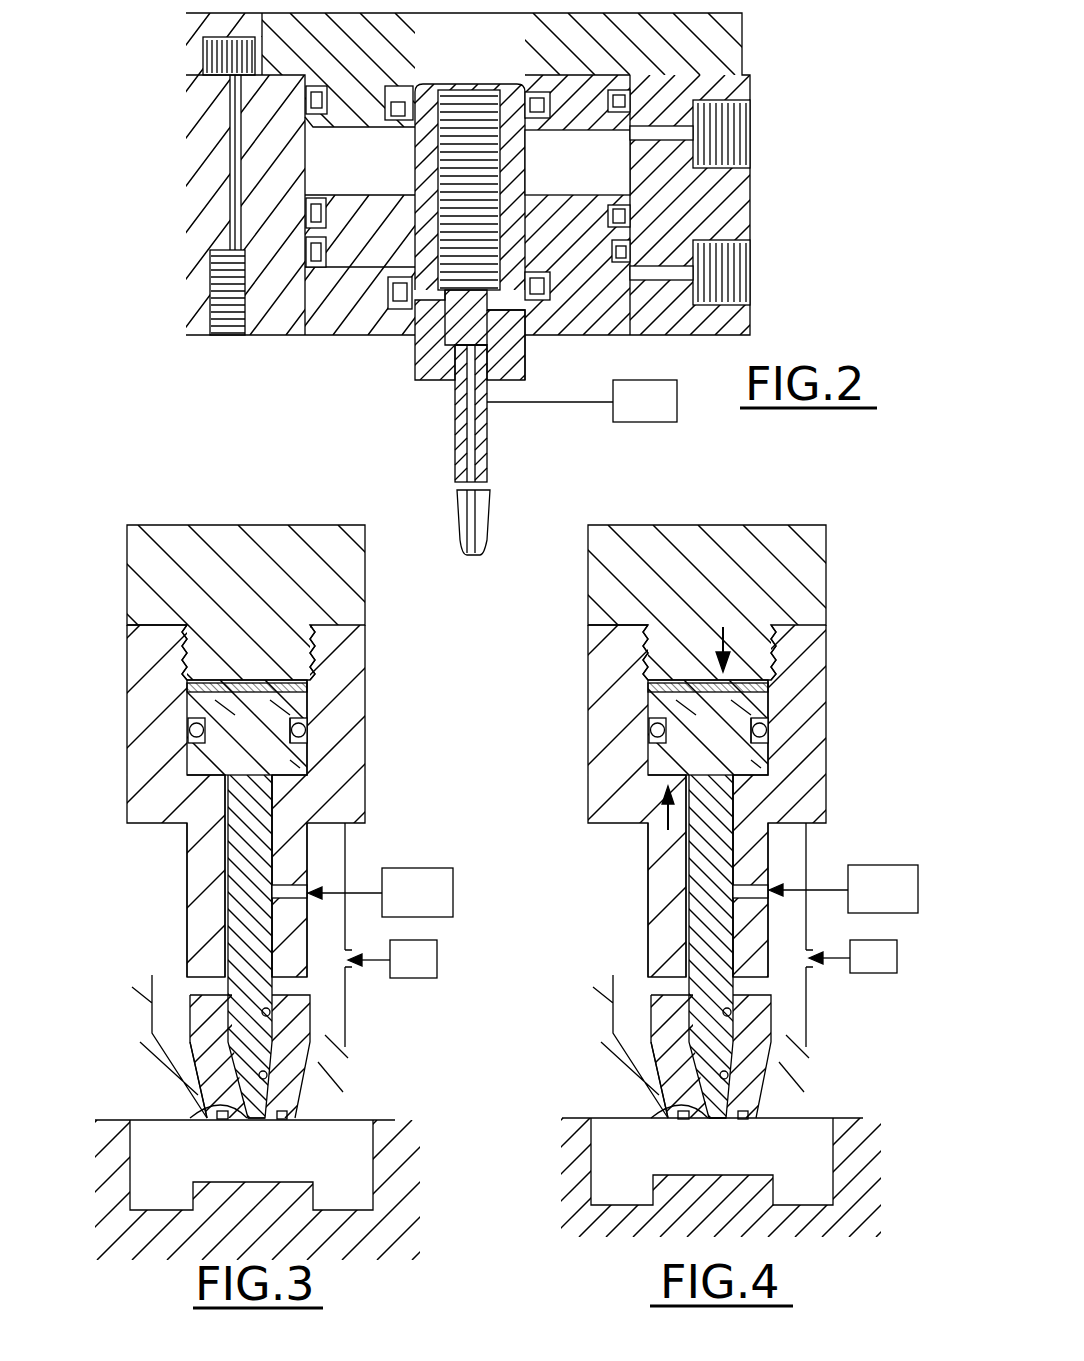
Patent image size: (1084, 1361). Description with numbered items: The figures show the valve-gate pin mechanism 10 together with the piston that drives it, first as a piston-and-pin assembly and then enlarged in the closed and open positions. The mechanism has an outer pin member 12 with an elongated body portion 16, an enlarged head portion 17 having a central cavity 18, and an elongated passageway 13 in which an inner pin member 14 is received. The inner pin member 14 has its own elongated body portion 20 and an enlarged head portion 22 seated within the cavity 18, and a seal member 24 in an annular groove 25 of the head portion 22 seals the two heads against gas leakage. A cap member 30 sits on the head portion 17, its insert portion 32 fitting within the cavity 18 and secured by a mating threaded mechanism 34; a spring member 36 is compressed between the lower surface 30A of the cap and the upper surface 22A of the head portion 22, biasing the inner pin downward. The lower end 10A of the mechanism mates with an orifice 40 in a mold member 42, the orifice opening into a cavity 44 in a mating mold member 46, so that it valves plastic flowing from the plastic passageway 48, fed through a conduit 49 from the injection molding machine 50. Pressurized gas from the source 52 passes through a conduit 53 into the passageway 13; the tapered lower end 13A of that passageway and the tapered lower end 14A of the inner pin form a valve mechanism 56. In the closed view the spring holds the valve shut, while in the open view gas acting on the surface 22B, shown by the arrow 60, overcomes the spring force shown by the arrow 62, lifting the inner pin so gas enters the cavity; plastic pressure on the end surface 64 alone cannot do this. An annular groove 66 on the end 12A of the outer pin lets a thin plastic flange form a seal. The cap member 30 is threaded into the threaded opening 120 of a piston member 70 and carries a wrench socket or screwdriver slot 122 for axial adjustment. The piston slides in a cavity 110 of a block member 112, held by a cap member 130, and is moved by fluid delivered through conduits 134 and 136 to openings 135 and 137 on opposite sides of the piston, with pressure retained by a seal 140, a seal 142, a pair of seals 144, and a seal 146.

In FIG. 2, the valve-gate pin mechanism 10 is at (410, 406).
In FIG. 3, the valve-gate pin mechanism 10 is at (140, 880).
In FIG. 3, the lower end of the pin mechanism 10A is at (175, 1072).
In FIG. 4, the lower end of the pin mechanism 10A is at (572, 1068).
In FIG. 2, the outer pin member 12 is at (490, 472).
In FIG. 3, the outer pin member 12 is at (298, 1035).
In FIG. 4, the outer pin member 12 is at (717, 1056).
In FIG. 3, the end of the outer pin member 12A is at (203, 1063).
In FIG. 4, the end of the outer pin member 12A is at (611, 1046).
In FIG. 3, the elongated passageway 13 is at (270, 1008).
In FIG. 4, the elongated passageway 13 is at (789, 1034).
In FIG. 3, the lower end of passageway 13A is at (322, 1070).
In FIG. 4, the lower end of passageway 13A is at (829, 1060).
In FIG. 2, the inner pin member 14 is at (490, 427).
In FIG. 3, the inner pin member 14 is at (345, 812).
In FIG. 4, the inner pin member 14 is at (845, 910).
In FIG. 3, the tapered lower end of inner pin member 14A is at (215, 1102).
In FIG. 4, the tapered lower end of inner pin member 14A is at (653, 1097).
In FIG. 3, the elongated body portion 16 is at (200, 928).
In FIG. 4, the elongated body portion 16 is at (618, 900).
In FIG. 2, the enlarged head portion 17 is at (495, 322).
In FIG. 3, the enlarged head portion 17 is at (130, 783).
In FIG. 4, the enlarged head portion 17 is at (675, 801).
In FIG. 3, the central cavity 18 is at (300, 769).
In FIG. 4, the central cavity 18 is at (812, 747).
In FIG. 3, the elongated body portion 20 is at (243, 855).
In FIG. 4, the elongated body portion 20 is at (709, 946).
In FIG. 2, the enlarged head portion 22 is at (467, 357).
In FIG. 3, the enlarged head portion 22 is at (190, 700).
In FIG. 4, the enlarged head portion 22 is at (685, 727).
In FIG. 3, the upper surface of the head portion 22A is at (252, 723).
In FIG. 4, the upper surface of the head portion 22A is at (713, 716).
In FIG. 3, the surface of the head portion 22B is at (283, 876).
In FIG. 4, the surface of the head portion 22B is at (751, 876).
In FIG. 3, the seal member 24 is at (310, 691).
In FIG. 4, the seal member 24 is at (766, 700).
In FIG. 3, the annular cavity or groove 25 is at (305, 741).
In FIG. 4, the annular cavity or groove 25 is at (817, 717).
In FIG. 2, the cap member 30 is at (447, 300).
In FIG. 3, the cap member 30 is at (313, 538).
In FIG. 4, the cap member 30 is at (708, 582).
In FIG. 3, the lower surface of the cap member 30A is at (237, 688).
In FIG. 3, the insert portion 32 is at (190, 628).
In FIG. 4, the insert portion 32 is at (594, 633).
In FIG. 3, the mating threaded mechanism 34 is at (190, 656).
In FIG. 4, the mating threaded mechanism 34 is at (589, 639).
In FIG. 2, the spring member 36 is at (505, 368).
In FIG. 3, the spring member 36 is at (308, 681).
In FIG. 4, the spring member 36 is at (760, 658).
In FIG. 3, the orifice 40 is at (292, 1124).
In FIG. 4, the orifice 40 is at (768, 1133).
In FIG. 3, the mold member 42 is at (347, 1075).
In FIG. 4, the mold member 42 is at (850, 1062).
In FIG. 3, the cavity 44 is at (172, 1200).
In FIG. 4, the cavity 44 is at (712, 1162).
In FIG. 3, the mating mold member 46 is at (392, 1167).
In FIG. 4, the mating mold member 46 is at (719, 1177).
In FIG. 3, the plastic passageway 48 is at (333, 928).
In FIG. 4, the plastic passageway 48 is at (857, 900).
In FIG. 3, the conduit 49 is at (360, 968).
In FIG. 4, the conduit 49 is at (862, 974).
In FIG. 3, the plastic injection molding machine 50 is at (437, 960).
In FIG. 4, the plastic injection molding machine 50 is at (876, 956).
In FIG. 2, the gas source 52 is at (672, 380).
In FIG. 3, the gas source 52 is at (437, 868).
In FIG. 4, the gas source 52 is at (851, 871).
In FIG. 3, the conduit 53 is at (288, 883).
In FIG. 4, the conduit 53 is at (803, 852).
In FIG. 3, the valve mechanism 56 is at (248, 1125).
In FIG. 4, the valve mechanism 56 is at (679, 1139).
In FIG. 4, the arrow 60 is at (625, 820).
In FIG. 4, the arrow 62 is at (747, 630).
In FIG. 3, the surface 64 is at (173, 1098).
In FIG. 4, the surface 64 is at (637, 1097).
In FIG. 3, the annular groove 66 is at (261, 1147).
In FIG. 4, the annular groove 66 is at (720, 1145).
In FIG. 2, the piston member 70 is at (340, 224).
In FIG. 2, the cavity 110 is at (592, 172).
In FIG. 2, the block member 112 is at (275, 154).
In FIG. 2, the threaded opening or passageway 120 is at (482, 95).
In FIG. 2, the wrench socket or screwdriver slot 122 is at (497, 270).
In FIG. 2, the cap member 130 is at (688, 42).
In FIG. 2, the conduit 134 is at (745, 135).
In FIG. 2, the opening 135 is at (750, 108).
In FIG. 2, the conduit 136 is at (745, 272).
In FIG. 2, the opening 137 is at (750, 245).
In FIG. 2, the seal 140 is at (322, 92).
In FIG. 2, the seal 142 is at (405, 86).
In FIG. 2, the pair of seals 144 is at (610, 218).
In FIG. 2, the seal 146 is at (392, 292).